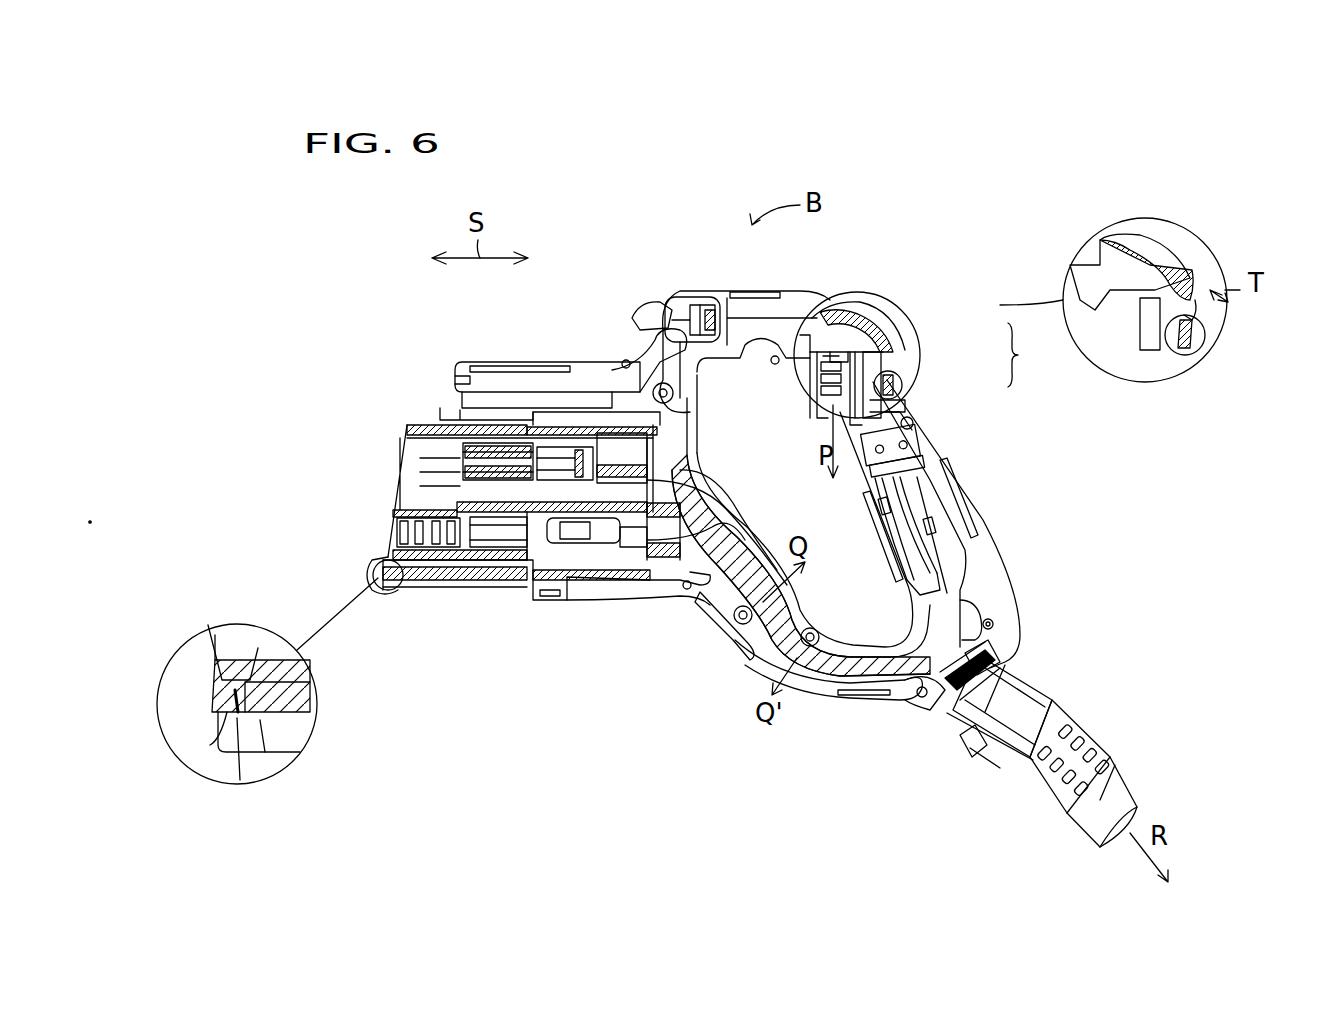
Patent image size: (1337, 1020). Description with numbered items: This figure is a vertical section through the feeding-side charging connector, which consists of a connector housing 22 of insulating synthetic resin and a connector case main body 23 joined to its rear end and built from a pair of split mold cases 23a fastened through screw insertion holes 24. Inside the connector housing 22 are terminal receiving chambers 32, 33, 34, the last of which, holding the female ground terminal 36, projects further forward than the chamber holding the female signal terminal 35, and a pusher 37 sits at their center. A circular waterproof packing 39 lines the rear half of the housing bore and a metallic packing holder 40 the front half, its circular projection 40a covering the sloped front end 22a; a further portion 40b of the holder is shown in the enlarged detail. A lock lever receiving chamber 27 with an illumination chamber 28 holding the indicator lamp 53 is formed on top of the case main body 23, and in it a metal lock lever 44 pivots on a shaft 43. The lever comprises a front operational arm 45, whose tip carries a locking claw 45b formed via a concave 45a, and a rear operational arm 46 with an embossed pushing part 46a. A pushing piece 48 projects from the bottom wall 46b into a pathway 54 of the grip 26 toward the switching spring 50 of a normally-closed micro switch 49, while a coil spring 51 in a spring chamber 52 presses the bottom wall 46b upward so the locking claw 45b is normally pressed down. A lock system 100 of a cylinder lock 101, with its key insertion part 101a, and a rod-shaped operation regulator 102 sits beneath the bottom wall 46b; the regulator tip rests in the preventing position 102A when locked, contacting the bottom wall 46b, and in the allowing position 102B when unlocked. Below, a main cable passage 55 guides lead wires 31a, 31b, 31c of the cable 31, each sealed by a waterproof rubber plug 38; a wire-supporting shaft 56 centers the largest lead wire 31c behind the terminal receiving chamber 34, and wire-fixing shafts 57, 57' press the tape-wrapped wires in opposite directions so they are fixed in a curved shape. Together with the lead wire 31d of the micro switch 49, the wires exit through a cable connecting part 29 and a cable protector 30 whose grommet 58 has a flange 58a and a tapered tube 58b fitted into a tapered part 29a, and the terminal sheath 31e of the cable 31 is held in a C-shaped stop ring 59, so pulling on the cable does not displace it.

The connector housing 22 is at (432, 590).
The sloped front end 22a is at (240, 715).
The connector case main body 23 is at (752, 665).
The split mold case 23a is at (801, 573).
The screw insertion holes 24 is at (683, 592).
The grip 26 is at (1000, 555).
The lock lever receiving chamber 27 is at (652, 322).
The illumination chamber 28 is at (716, 292).
The cable connecting part 29 is at (935, 735).
The tapered part 29a is at (978, 770).
The cable protector 30 is at (1070, 735).
The cable 31 is at (1062, 840).
The lead wire 31a is at (712, 470).
The lead wire 31b is at (735, 505).
The lead wire 31c is at (740, 532).
The lead wire of the micro switch 31d is at (890, 540).
The terminal sheath 31e is at (918, 705).
The terminal receiving chamber 32 is at (445, 487).
The terminal receiving chamber 33 is at (400, 448).
The terminal receiving chamber 34 is at (515, 575).
The female signal terminal 35 is at (450, 427).
The female ground terminal 36 is at (510, 565).
The pusher 37 is at (440, 458).
The waterproof rubber plug 38 is at (618, 580).
The circular waterproof packing 39 is at (468, 580).
The packing holder 40 is at (418, 582).
The circular projection 40a is at (198, 735).
The ring portion 40b is at (205, 690).
The shaft 43 is at (676, 404).
The lock lever 44 is at (650, 385).
The front side operational arm 45 is at (548, 395).
The concave 45a is at (488, 395).
The locking claw 45b is at (470, 408).
The rear side operational arm 46 is at (800, 310).
The pushing part 46a is at (862, 312).
The bottom wall 46b is at (880, 348).
The pushing piece 48 is at (895, 340).
The micro switch 49 is at (918, 462).
The switching spring 50 is at (912, 418).
The coil spring 51 is at (818, 385).
The spring chamber 52 is at (842, 392).
The indicator lamp 53 is at (668, 312).
The pathway 54 is at (952, 508).
The main cable passage 55 is at (825, 685).
The wire-supporting shaft 56 is at (710, 610).
The wire-fixing shaft 57 is at (786, 594).
The wire-fixing shaft 57' is at (846, 621).
The grommet 58 is at (1128, 612).
The flange 58a is at (1020, 660).
The tapered tube 58b is at (1025, 690).
The C-shaped stop ring 59 is at (955, 740).
The lock system 100 is at (1040, 355).
The cylinder lock 101 is at (902, 388).
The key insertion part 101a is at (1188, 352).
The operation regulator 102 is at (900, 372).
The preventing position 102A is at (1195, 285).
The allowing position 102B is at (1205, 312).